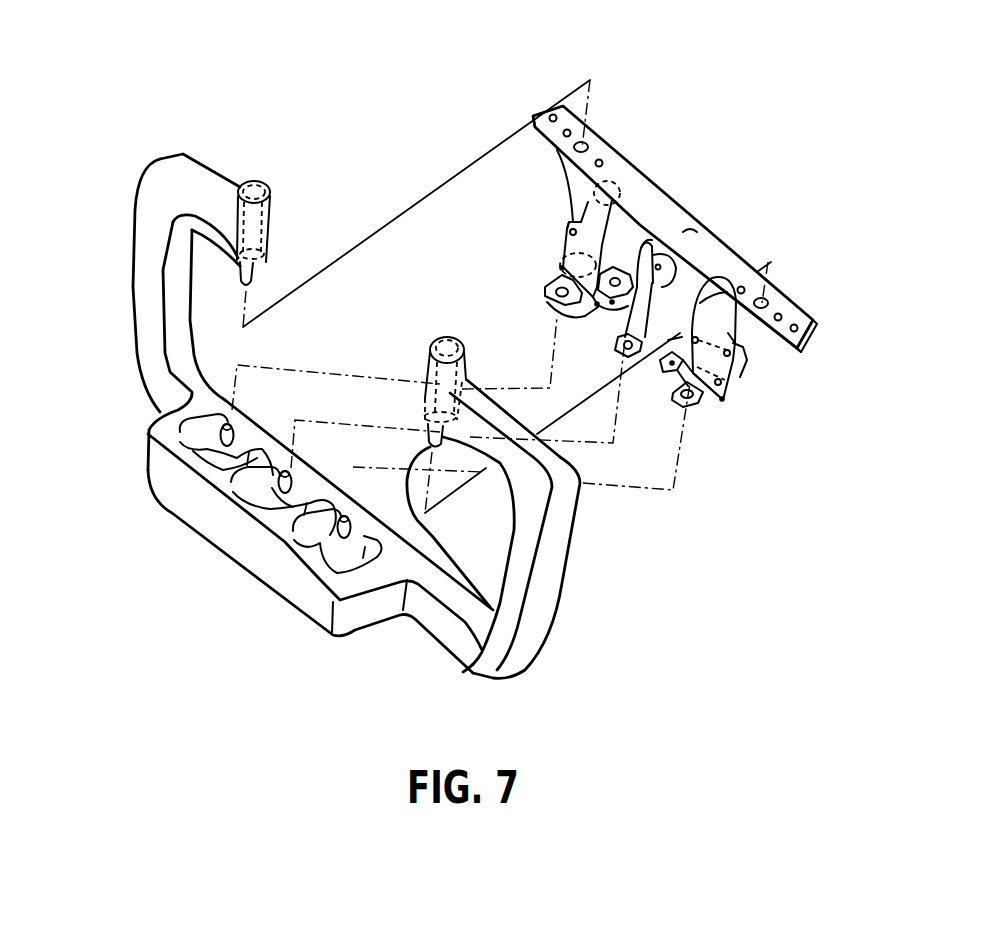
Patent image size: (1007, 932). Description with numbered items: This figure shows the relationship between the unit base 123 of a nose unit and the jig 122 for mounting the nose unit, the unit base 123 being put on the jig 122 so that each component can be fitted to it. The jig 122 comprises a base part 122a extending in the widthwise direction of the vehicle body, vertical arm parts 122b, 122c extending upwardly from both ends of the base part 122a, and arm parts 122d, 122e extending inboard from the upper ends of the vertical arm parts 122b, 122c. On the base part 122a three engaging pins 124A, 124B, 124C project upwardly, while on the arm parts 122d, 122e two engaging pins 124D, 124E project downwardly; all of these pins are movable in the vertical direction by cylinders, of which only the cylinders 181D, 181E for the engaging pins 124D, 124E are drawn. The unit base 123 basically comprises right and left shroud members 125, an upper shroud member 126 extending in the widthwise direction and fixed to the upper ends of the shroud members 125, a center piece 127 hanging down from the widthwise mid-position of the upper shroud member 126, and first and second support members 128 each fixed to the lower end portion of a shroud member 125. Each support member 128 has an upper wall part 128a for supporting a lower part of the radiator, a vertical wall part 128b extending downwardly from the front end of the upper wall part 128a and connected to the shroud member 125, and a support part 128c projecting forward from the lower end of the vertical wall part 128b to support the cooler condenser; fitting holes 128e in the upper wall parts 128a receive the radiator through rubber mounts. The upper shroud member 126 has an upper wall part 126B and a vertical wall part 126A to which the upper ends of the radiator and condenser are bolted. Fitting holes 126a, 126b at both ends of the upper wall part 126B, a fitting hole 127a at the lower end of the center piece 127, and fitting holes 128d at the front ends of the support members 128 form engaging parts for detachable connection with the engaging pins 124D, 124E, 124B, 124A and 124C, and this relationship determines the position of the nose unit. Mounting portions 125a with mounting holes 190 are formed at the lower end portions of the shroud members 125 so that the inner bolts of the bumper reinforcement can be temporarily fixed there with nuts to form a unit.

The jig for mounting a nose unit 122 is at (410, 626).
The base part 122a is at (223, 551).
The vertical arm part 122b is at (133, 304).
The vertical arm part 122c is at (562, 581).
The arm part 122d is at (212, 182).
The arm part 122e is at (468, 452).
The engaging pin 124A is at (221, 444).
The engaging pin 124B is at (245, 490).
The engaging pin 124C is at (307, 583).
The engaging pin 124D is at (243, 276).
The engaging pin 124E is at (412, 524).
The cylinder 181D is at (268, 218).
The cylinder 181E is at (427, 372).
The unit base 123 is at (676, 191).
The shroud member 125 is at (615, 245).
The mounting portion 125a is at (565, 246).
The upper shroud member 126 is at (704, 229).
The vertical wall part 126A is at (555, 146).
The upper wall part 126B is at (602, 160).
The fitting hole 126a is at (585, 148).
The fitting hole 126b is at (767, 299).
The center piece 127 is at (720, 255).
The fitting hole 127a is at (617, 336).
The support member 128 is at (561, 268).
The upper wall part 128a is at (645, 215).
The vertical wall part 128b is at (598, 307).
The support part 128c is at (620, 295).
The fitting hole 128d is at (556, 297).
The fitting hole 128e is at (683, 230).
The mounting hole 190 is at (576, 234).